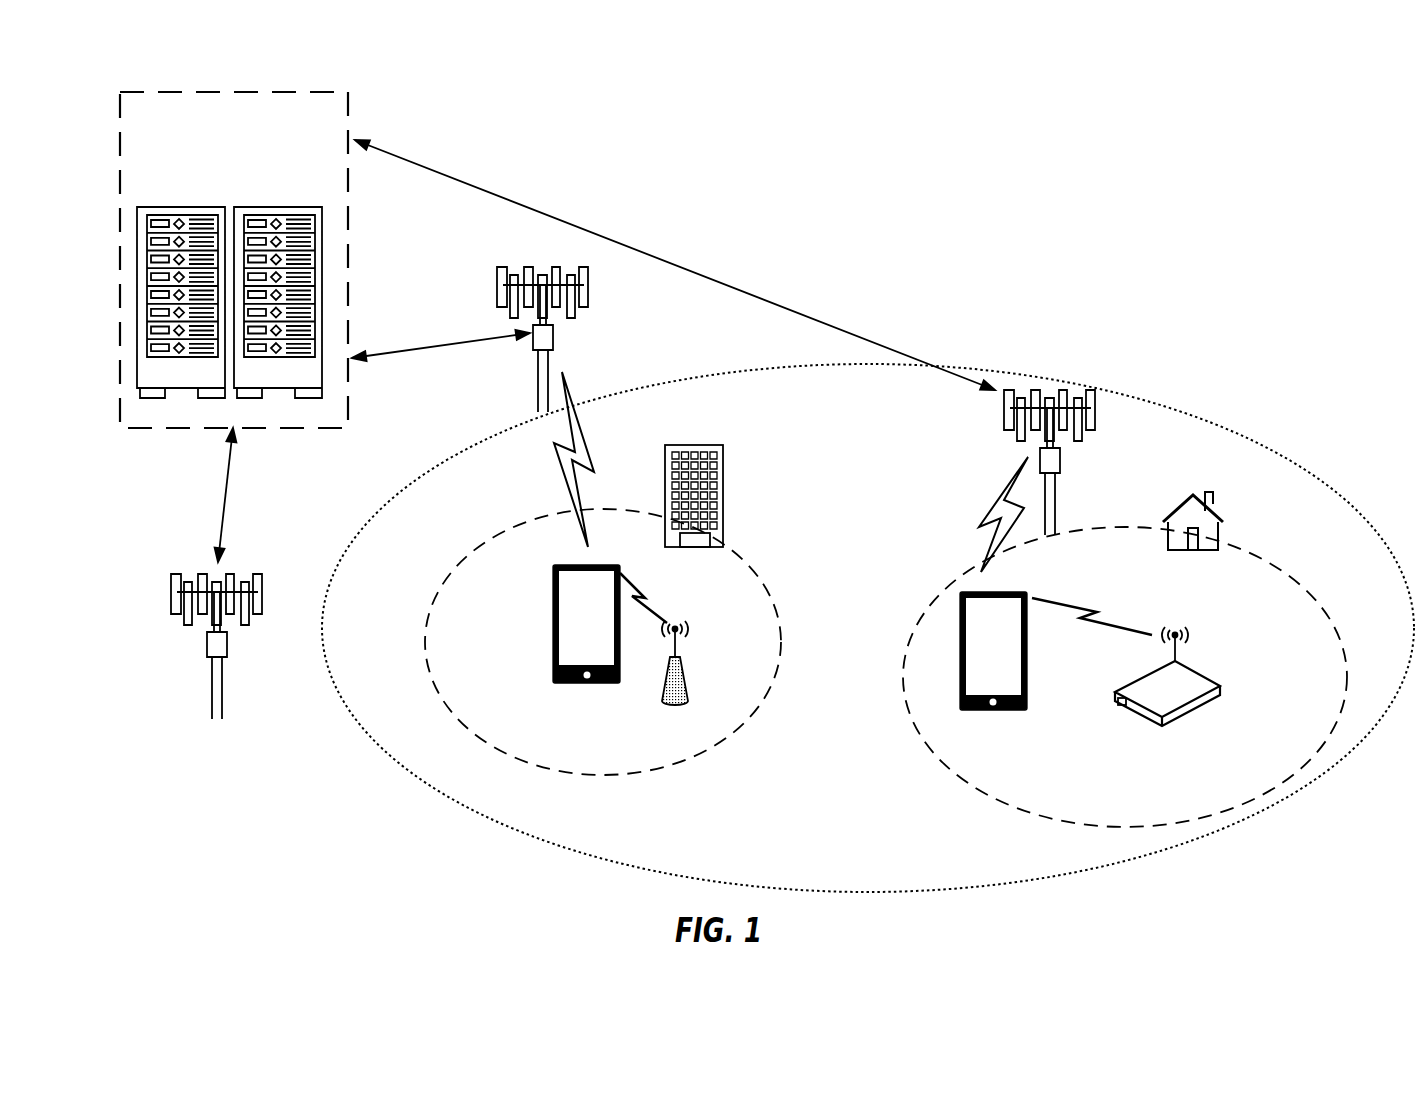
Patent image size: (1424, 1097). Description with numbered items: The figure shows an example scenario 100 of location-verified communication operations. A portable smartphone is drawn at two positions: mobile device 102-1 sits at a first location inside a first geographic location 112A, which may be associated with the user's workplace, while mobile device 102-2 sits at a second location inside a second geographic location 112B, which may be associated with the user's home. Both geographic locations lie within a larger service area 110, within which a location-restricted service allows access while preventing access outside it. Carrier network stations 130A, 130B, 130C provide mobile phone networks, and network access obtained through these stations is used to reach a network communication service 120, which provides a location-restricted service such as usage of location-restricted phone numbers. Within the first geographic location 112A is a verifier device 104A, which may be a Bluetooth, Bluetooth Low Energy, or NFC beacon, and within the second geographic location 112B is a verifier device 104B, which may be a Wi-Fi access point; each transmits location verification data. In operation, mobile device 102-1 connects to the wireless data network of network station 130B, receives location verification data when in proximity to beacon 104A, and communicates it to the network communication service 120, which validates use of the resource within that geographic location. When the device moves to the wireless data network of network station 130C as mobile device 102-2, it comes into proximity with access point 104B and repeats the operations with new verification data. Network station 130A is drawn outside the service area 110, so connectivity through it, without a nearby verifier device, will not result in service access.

The example scenario 100 is at (1314, 148).
The network communication service 120 is at (196, 90).
The service area 110 is at (1252, 818).
The first geographic location 112A is at (687, 756).
The second geographic location 112B is at (982, 790).
The carrier network station 130A is at (172, 590).
The carrier network station 130B is at (499, 291).
The carrier network station 130C is at (1097, 412).
The mobile device 102-1 is at (553, 668).
The mobile device 102-2 is at (1010, 712).
The verifier device 104A is at (688, 673).
The verifier device 104B is at (1208, 682).